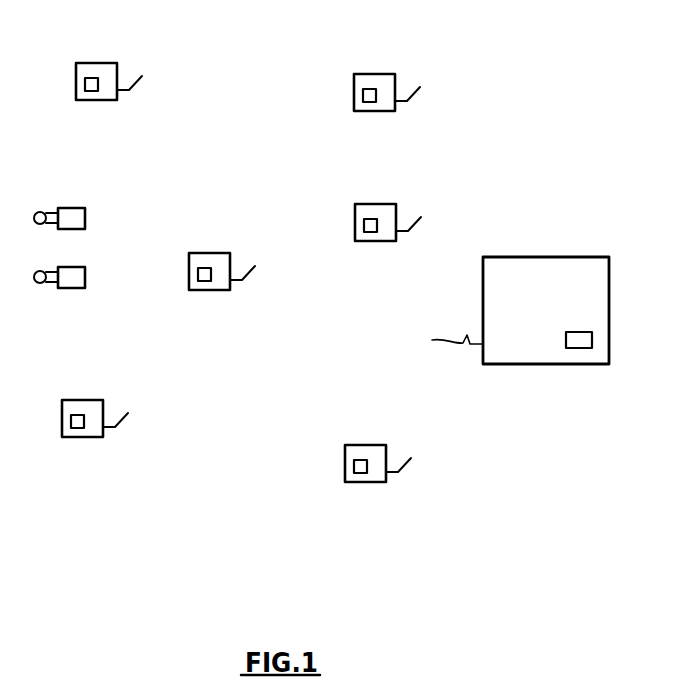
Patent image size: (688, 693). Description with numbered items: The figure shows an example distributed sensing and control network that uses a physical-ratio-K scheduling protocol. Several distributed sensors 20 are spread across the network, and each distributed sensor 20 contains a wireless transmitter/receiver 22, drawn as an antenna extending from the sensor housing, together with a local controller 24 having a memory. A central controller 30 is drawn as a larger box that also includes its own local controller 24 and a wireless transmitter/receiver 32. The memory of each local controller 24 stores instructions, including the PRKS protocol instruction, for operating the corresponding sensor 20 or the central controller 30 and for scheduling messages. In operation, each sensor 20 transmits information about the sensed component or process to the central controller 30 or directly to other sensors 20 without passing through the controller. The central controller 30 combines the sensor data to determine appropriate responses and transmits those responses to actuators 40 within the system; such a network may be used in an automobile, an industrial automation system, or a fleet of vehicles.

The distributed sensor 20 is at (104, 72).
The wireless transmitter/receiver 22 is at (129, 90).
The local controller 24 is at (91, 91).
The central controller 30 is at (561, 311).
The wireless transmitter/receiver 32 is at (442, 340).
The actuator 40 is at (75, 221).